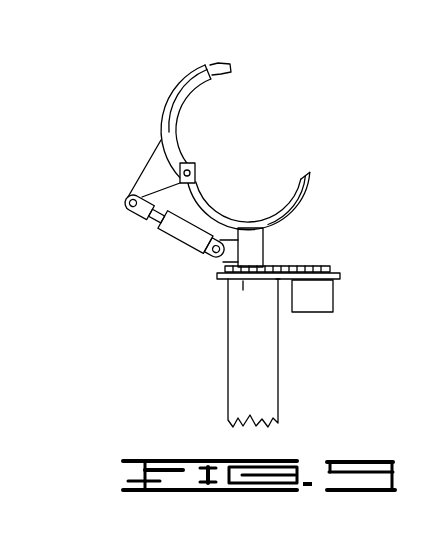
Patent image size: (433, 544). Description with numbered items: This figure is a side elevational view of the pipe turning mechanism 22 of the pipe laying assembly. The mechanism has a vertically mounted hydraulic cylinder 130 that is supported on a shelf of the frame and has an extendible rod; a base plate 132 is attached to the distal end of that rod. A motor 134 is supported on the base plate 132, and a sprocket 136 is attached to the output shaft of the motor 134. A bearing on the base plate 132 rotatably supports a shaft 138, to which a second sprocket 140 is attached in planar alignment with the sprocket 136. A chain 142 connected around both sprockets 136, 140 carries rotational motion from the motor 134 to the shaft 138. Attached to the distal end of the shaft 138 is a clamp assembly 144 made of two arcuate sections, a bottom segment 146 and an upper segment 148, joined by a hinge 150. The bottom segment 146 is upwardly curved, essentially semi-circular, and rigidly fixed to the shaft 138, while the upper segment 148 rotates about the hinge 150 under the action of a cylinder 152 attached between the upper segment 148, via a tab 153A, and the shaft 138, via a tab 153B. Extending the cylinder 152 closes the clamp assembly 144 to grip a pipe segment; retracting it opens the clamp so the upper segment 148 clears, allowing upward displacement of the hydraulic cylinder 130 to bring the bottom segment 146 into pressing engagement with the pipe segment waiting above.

The pipe turning mechanism 22 is at (296, 108).
The hydraulic cylinder 130 is at (237, 383).
The base plate 132 is at (243, 281).
The motor 134 is at (325, 294).
The sprocket 136 is at (318, 266).
The shaft 138 is at (265, 231).
The sprocket 140 is at (251, 251).
The chain 142 is at (278, 279).
The clamp assembly 144 is at (158, 113).
The bottom segment 146 is at (312, 182).
The upper segment 148 is at (231, 64).
The hinge 150 is at (194, 169).
The cylinder 152 is at (183, 235).
The tab 153A is at (145, 182).
The tab 153B is at (228, 256).